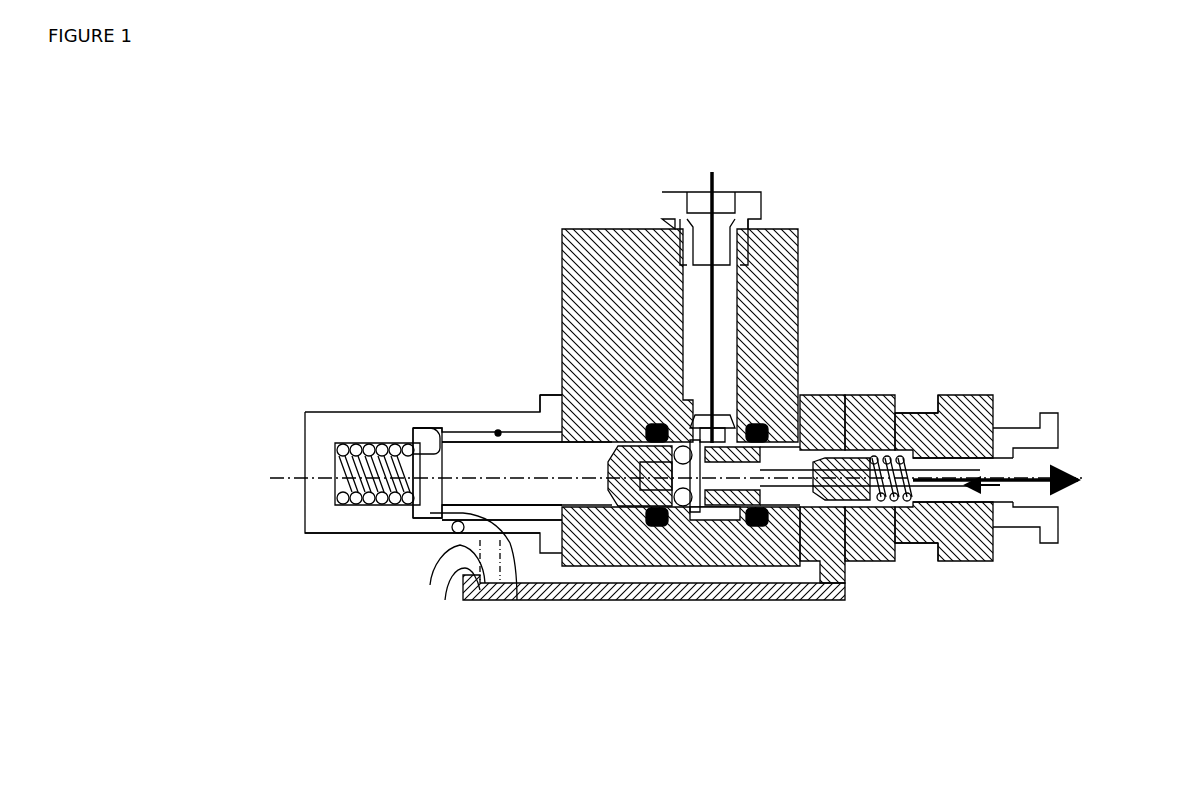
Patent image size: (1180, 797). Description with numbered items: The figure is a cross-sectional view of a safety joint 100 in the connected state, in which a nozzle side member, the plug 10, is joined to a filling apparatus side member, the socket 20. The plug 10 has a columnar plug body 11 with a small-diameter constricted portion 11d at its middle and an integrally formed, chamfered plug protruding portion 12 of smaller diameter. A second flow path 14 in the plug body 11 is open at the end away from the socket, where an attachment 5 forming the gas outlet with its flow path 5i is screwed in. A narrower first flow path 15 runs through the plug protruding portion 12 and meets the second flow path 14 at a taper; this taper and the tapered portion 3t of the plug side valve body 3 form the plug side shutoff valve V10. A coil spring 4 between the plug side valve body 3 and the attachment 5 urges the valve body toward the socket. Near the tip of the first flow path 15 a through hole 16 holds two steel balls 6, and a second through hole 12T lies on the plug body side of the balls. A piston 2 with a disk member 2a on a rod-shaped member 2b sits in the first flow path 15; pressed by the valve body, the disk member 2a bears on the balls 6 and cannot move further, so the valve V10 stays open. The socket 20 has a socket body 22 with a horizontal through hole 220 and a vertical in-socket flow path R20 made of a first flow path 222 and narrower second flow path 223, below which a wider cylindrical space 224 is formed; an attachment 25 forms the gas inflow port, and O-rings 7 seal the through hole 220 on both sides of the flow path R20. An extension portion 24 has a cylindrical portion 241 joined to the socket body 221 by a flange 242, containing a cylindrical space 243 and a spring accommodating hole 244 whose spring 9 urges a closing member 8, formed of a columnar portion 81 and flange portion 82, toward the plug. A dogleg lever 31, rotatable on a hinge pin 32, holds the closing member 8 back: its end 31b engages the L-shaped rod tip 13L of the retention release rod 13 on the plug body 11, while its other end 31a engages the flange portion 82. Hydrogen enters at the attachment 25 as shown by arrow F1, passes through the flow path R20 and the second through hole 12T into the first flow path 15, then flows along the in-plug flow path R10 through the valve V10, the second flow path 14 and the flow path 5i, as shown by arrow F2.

The safety joint 100 is at (950, 210).
The filling apparatus side member (socket) 20 is at (519, 347).
The attachment 25 is at (662, 205).
The socket body 22 is at (559, 318).
The socket body 221 is at (562, 236).
The first flow path 222 is at (737, 315).
The second flow path 223 is at (700, 425).
The cylindrical space 224 is at (712, 440).
The opening portion (through hole) 220 is at (720, 455).
The extension portion 24 is at (433, 438).
The cylindrical portion 241 is at (562, 397).
The flange 242 is at (542, 395).
The cylindrical space 243 is at (497, 433).
The spring accommodating hole 244 is at (413, 424).
The spring 9 is at (322, 533).
The closing member holding mechanism (lever) 31 is at (430, 518).
The other end of the lever 31a is at (440, 522).
The end of the lever 31b is at (505, 545).
The hinge pin 32 is at (458, 533).
The rod tip 13L is at (437, 572).
The closing member 8 is at (557, 584).
The columnar portion 81 is at (523, 505).
The flange portion 82 is at (497, 521).
The through hole 16 is at (620, 508).
The second through hole 12T is at (740, 583).
The O-rings 7 is at (657, 530).
The steel balls 6 is at (712, 512).
The piston 2 is at (793, 396).
The disk member 2a is at (735, 452).
The rod-shaped member 2b is at (765, 447).
The arrow F1 is at (722, 176).
The in-socket flow path R20 is at (724, 285).
The nozzle side member (plug) 10 is at (809, 540).
The plug protruding portion 12 is at (822, 585).
The plug side valve body 3 is at (872, 395).
The tapered portion 3t is at (818, 445).
The plug body 11 is at (963, 561).
The coil spring 4 is at (932, 393).
The constricted portion 11d is at (925, 546).
The attachment 5 is at (1056, 545).
The flow path 5i is at (1040, 466).
The second flow path 14 is at (890, 505).
The first flow path 15 is at (850, 520).
The plug side shutoff valve V10 is at (862, 505).
The retention release rod 13 is at (654, 623).
The arrow F2 is at (975, 470).
The in-plug flow path R10 is at (985, 492).